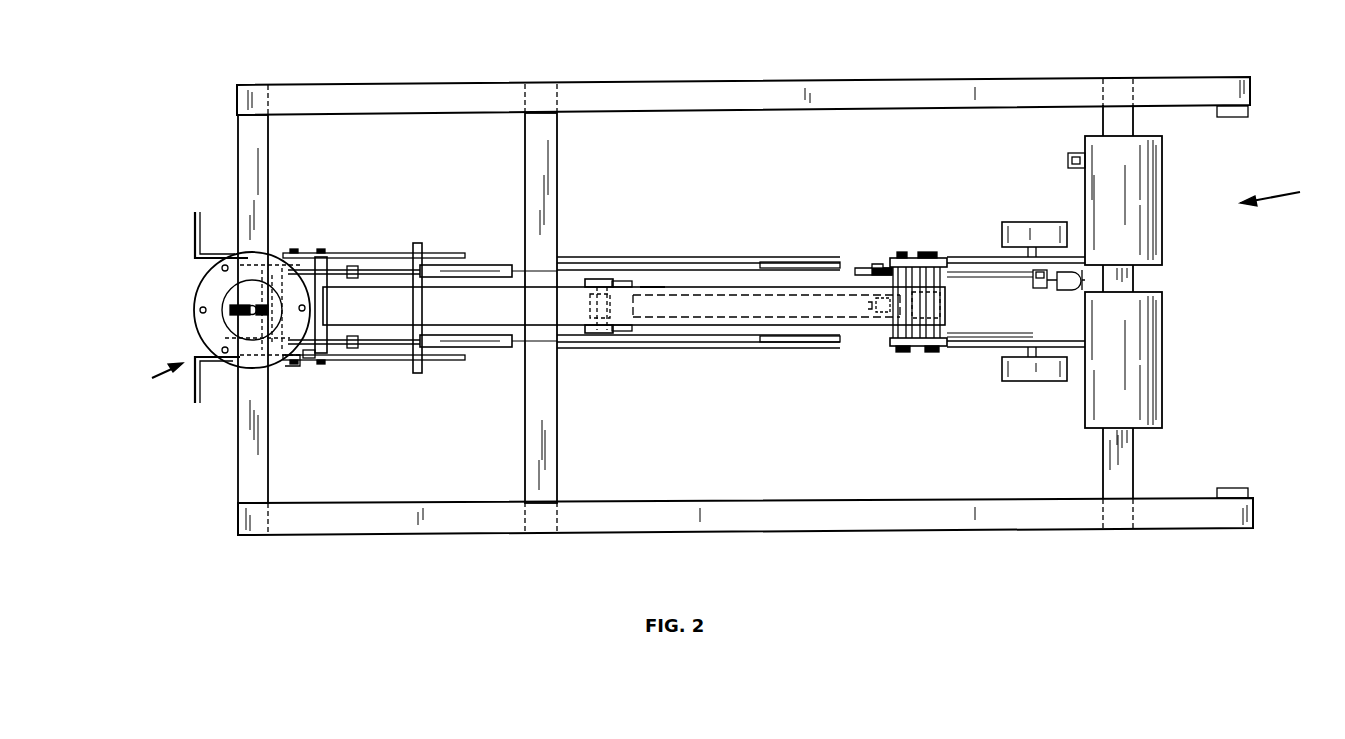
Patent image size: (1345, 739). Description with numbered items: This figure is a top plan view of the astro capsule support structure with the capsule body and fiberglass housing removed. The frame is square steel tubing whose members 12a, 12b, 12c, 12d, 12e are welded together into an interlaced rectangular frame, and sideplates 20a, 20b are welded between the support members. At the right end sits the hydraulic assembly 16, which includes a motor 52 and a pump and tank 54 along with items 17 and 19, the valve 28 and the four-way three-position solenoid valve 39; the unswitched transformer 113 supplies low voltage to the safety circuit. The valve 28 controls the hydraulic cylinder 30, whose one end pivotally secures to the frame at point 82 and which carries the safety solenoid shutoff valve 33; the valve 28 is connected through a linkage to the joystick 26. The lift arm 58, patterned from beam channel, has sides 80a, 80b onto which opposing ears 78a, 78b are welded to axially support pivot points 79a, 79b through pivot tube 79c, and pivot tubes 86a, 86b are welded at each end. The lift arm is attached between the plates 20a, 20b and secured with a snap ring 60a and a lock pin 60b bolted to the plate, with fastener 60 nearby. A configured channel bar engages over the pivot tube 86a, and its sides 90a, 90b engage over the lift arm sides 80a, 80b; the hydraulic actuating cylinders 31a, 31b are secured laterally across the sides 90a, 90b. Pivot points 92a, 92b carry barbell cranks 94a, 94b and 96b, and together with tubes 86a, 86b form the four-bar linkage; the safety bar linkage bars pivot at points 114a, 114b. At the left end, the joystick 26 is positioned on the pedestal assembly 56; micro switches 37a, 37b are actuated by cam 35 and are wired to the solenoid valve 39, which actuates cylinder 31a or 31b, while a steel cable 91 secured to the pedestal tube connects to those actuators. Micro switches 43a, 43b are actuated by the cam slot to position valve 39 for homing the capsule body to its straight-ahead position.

The frame member 12a is at (357, 535).
The frame member 12b is at (343, 85).
The frame member 12c is at (268, 166).
The frame member 12d is at (557, 188).
The frame member 12e is at (1134, 470).
The hydraulic assembly 16 is at (1283, 191).
The motor 17 is at (1022, 222).
The motor 19 is at (1036, 381).
The sideplate 20a is at (692, 263).
The sideplate 20b is at (772, 348).
The joystick 26 is at (258, 287).
The valve 28 is at (1040, 288).
The hydraulic cylinder 30 is at (684, 325).
The hydraulic actuating cylinder 31a is at (492, 265).
The hydraulic actuating cylinder 31b is at (500, 347).
The safety solenoid shutoff valve 33 is at (886, 306).
The cam 35 is at (246, 310).
The micro switch 37a is at (243, 305).
The micro switch 37b is at (256, 316).
The four-way three-position solenoid valve 39 is at (1072, 290).
The micro switch 43a is at (262, 337).
The micro switch 43b is at (282, 364).
The motor 52 is at (1162, 200).
The pump and tank 54 is at (1162, 345).
The pedestal assembly 56 is at (149, 379).
The lift arm 58 is at (652, 287).
The carriage bolt 60 is at (925, 252).
The snap ring 60a is at (940, 258).
The lock pin 60b is at (945, 349).
The ear 78a is at (618, 331).
The ear 78b is at (619, 281).
The pivot point 79a is at (598, 279).
The pivot point 79b is at (599, 333).
The pivot tube 79c is at (590, 306).
The lift arm side 80a is at (724, 317).
The lift arm side 80b is at (740, 295).
The pivot point 82 is at (920, 348).
The pivot tube 86a is at (318, 357).
The pivot tube 86b is at (933, 352).
The channel bar side 90a is at (419, 373).
The channel bar side 90b is at (400, 253).
The steel cable 91 is at (347, 266).
The pivot point 92a is at (305, 370).
The pivot point 92b is at (906, 352).
The barbell crank 94a is at (240, 360).
The barbell crank 94b is at (243, 265).
The barbell crank 96b is at (878, 266).
The unswitched transformer 113 is at (1070, 168).
The pivot point 114a is at (838, 262).
The pivot point 114b is at (838, 342).